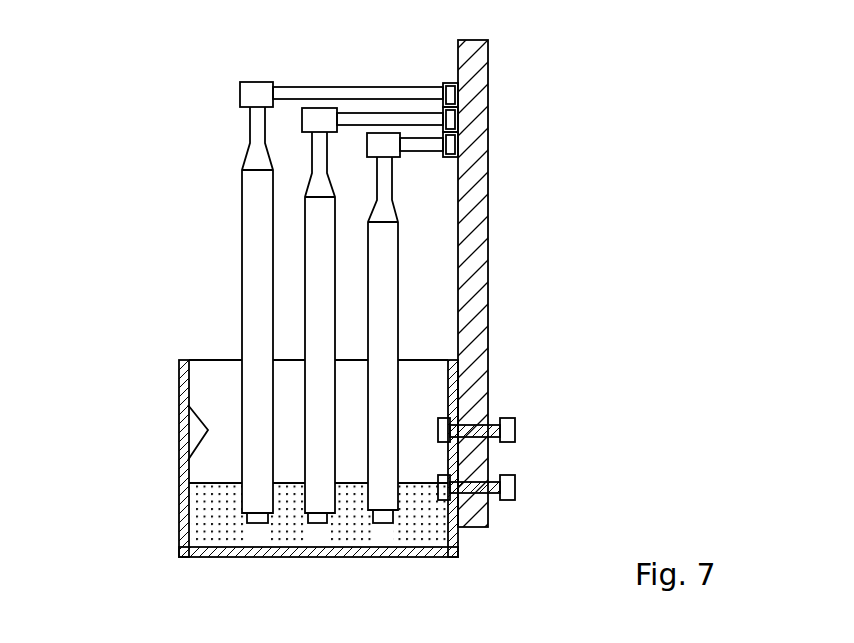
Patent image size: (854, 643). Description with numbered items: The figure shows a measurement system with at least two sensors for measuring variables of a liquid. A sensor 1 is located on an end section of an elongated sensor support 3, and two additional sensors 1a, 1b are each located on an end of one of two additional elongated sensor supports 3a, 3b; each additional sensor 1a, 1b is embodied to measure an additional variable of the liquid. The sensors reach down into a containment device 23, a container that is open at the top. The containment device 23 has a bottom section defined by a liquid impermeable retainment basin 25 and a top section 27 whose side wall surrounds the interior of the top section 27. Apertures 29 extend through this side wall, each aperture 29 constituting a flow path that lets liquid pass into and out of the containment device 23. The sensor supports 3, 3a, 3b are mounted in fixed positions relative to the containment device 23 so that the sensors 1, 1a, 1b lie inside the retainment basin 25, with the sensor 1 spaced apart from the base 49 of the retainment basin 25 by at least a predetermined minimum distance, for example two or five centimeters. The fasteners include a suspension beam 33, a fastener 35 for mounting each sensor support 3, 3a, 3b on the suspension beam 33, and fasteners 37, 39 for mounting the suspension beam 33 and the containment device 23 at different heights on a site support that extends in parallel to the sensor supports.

The sensor 1 is at (262, 521).
The additional sensor 1a is at (316, 521).
The additional sensor 1b is at (383, 521).
The sensor support 3 is at (236, 351).
The additional sensor support 3a is at (323, 365).
The additional sensor support 3b is at (385, 384).
The containment device 23 is at (267, 483).
The retainment basin 25 is at (289, 506).
The top section 27 is at (184, 423).
The apertures 29 is at (211, 432).
The suspension beam 33 is at (430, 145).
The fastener 35 is at (383, 148).
The fastener 37 is at (452, 150).
The fastener 39 is at (482, 426).
The base 49 is at (397, 552).